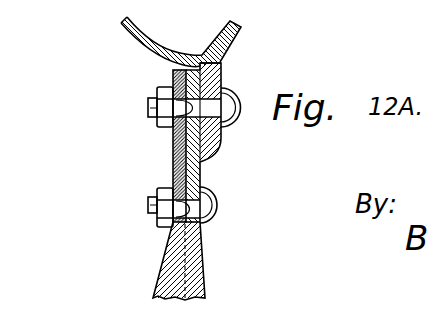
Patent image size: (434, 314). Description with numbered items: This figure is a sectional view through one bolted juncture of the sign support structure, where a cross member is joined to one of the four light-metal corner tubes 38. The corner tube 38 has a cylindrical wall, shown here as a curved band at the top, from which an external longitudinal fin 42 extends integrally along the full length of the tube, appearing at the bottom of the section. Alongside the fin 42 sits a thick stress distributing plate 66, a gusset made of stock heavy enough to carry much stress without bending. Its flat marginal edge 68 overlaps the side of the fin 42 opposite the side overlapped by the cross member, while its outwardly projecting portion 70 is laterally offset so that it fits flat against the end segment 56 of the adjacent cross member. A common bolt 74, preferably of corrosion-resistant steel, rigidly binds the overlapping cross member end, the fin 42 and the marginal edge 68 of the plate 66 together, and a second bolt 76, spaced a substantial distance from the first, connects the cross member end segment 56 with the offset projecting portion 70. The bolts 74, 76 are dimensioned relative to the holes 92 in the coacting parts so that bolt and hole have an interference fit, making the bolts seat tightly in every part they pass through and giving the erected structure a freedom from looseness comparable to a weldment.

The corner tube 38 is at (120, 23).
The external longitudinal fin 42 is at (157, 282).
The end segment of cross member 56 is at (175, 150).
The stress distributing plate 66 is at (222, 144).
The flat marginal edge 68 is at (211, 62).
The outwardly projecting portion 70 is at (192, 238).
The bolt 74 is at (239, 96).
The second bolt 76 is at (210, 222).
The holes 92 is at (148, 107).